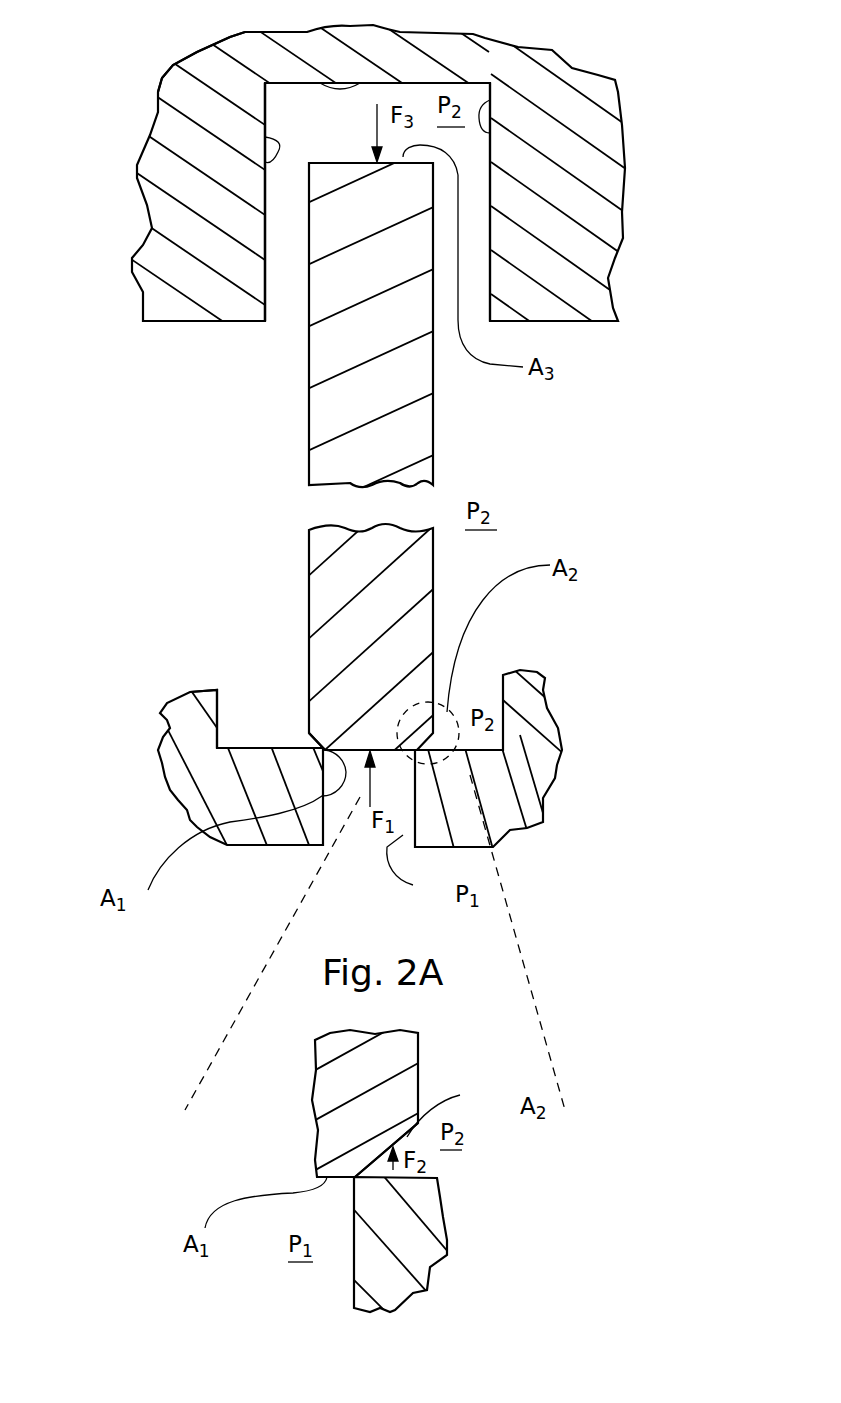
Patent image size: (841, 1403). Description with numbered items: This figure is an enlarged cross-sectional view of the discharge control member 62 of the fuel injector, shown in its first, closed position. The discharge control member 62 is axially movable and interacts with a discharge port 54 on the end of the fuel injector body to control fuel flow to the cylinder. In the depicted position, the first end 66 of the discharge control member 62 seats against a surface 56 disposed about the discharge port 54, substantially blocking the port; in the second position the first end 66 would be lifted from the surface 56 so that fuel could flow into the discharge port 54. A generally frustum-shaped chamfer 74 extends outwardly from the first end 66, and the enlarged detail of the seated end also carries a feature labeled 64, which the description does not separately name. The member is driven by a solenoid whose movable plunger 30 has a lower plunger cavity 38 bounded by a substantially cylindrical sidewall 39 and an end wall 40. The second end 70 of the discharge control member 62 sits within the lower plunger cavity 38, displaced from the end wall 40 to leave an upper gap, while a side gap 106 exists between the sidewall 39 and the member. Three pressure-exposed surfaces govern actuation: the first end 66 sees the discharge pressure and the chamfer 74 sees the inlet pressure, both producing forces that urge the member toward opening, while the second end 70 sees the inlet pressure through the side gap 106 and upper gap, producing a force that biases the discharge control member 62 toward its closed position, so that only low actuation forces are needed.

The plunger 30 is at (597, 218).
The lower plunger cavity 38 is at (265, 137).
The sidewall 39 is at (490, 100).
The end wall 40 is at (323, 83).
The discharge port 54 is at (326, 818).
The surface 56 is at (315, 748).
The discharge control member 62 is at (435, 390).
The chamfered rod end 64 is at (373, 1162).
The first end 66 is at (398, 750).
The second end 70 is at (263, 82).
The chamfer 74 is at (322, 748).
The side gap 106 is at (303, 258).